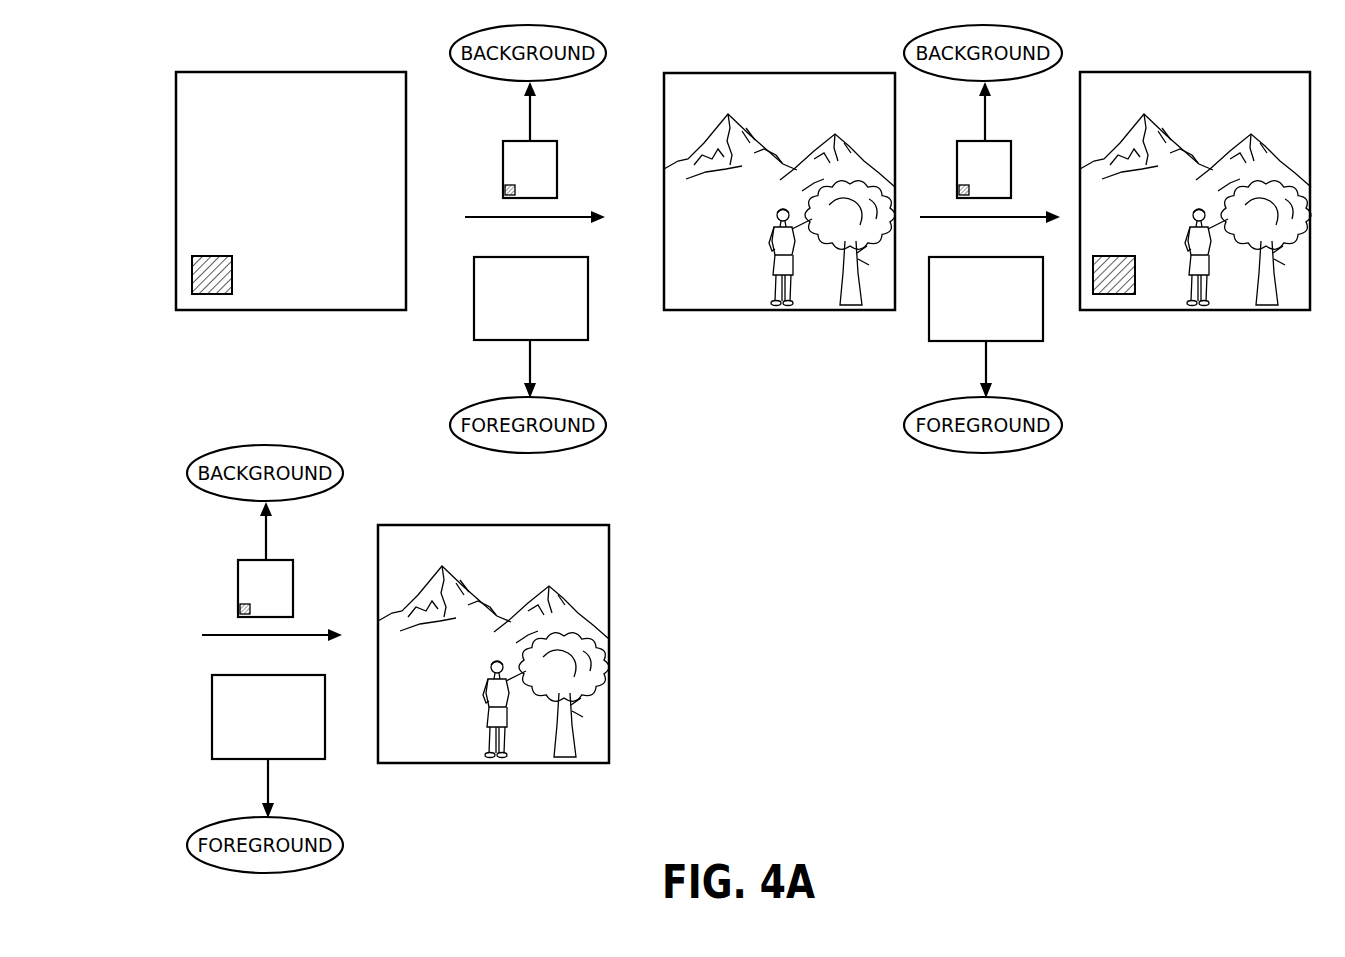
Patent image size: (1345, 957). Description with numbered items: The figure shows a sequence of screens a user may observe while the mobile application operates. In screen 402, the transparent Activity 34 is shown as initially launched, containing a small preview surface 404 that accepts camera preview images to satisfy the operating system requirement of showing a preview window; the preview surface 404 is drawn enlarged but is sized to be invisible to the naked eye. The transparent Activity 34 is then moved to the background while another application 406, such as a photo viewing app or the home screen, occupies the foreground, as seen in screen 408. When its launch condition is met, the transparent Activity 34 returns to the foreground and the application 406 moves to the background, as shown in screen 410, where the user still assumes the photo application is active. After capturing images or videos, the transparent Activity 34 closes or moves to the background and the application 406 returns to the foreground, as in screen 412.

The screen 402 is at (340, 72).
The preview surface 404 is at (190, 273).
The transparent Activity 34 is at (543, 140).
The another application 406 is at (560, 257).
The screen 408 is at (797, 72).
The screen 410 is at (1253, 72).
The display frame after application moved to background 412 is at (578, 524).